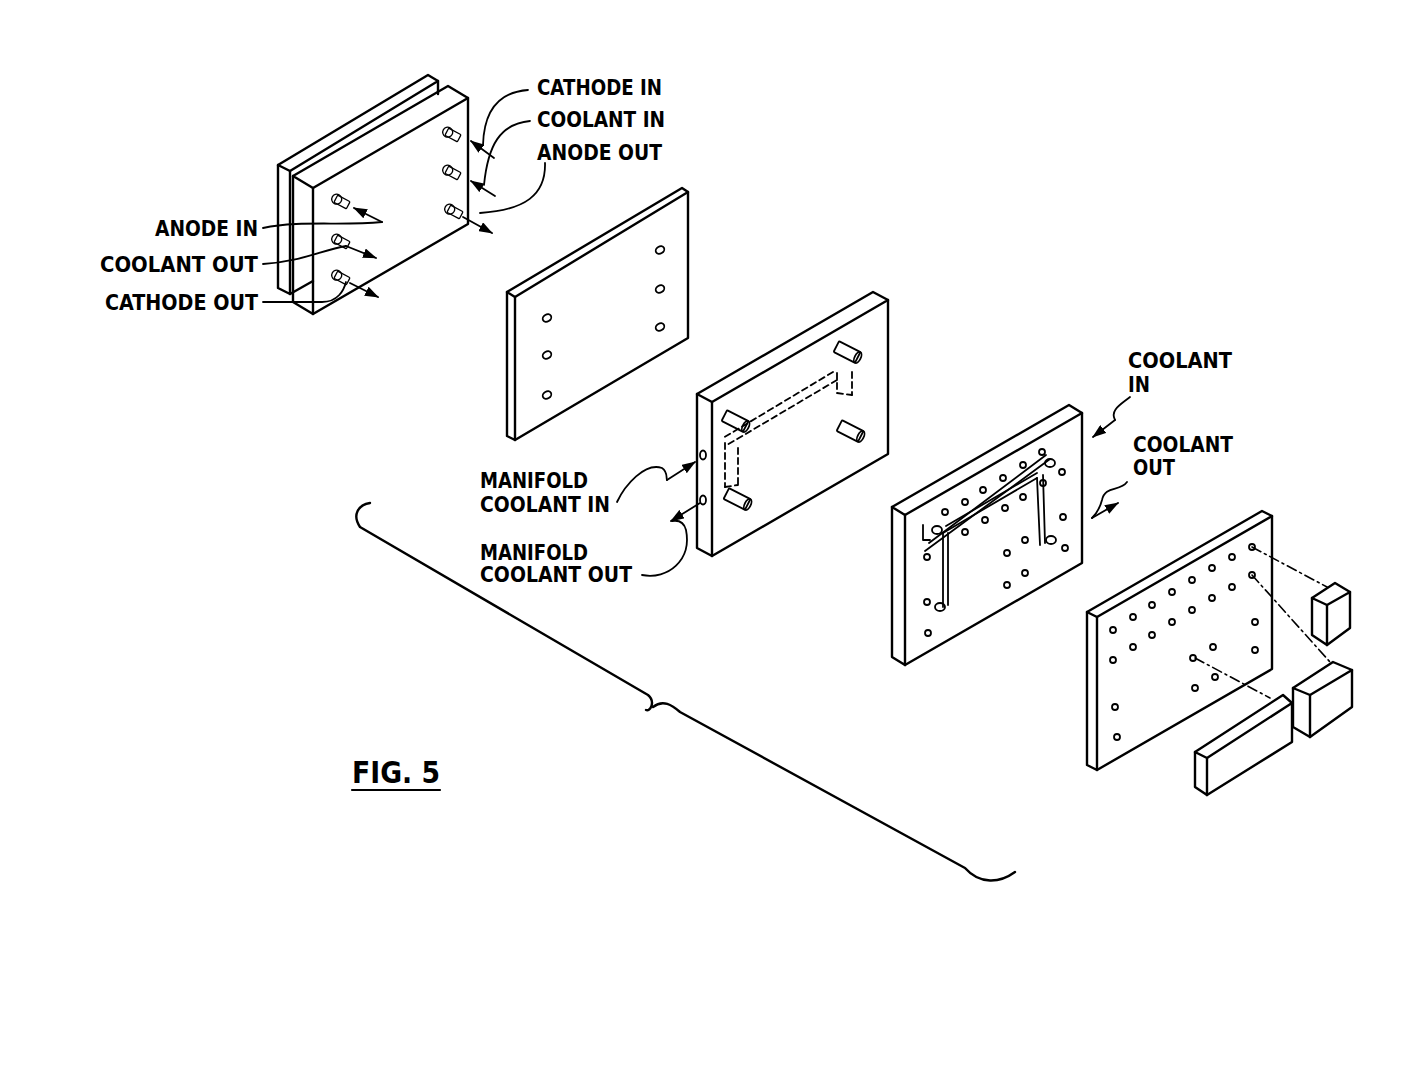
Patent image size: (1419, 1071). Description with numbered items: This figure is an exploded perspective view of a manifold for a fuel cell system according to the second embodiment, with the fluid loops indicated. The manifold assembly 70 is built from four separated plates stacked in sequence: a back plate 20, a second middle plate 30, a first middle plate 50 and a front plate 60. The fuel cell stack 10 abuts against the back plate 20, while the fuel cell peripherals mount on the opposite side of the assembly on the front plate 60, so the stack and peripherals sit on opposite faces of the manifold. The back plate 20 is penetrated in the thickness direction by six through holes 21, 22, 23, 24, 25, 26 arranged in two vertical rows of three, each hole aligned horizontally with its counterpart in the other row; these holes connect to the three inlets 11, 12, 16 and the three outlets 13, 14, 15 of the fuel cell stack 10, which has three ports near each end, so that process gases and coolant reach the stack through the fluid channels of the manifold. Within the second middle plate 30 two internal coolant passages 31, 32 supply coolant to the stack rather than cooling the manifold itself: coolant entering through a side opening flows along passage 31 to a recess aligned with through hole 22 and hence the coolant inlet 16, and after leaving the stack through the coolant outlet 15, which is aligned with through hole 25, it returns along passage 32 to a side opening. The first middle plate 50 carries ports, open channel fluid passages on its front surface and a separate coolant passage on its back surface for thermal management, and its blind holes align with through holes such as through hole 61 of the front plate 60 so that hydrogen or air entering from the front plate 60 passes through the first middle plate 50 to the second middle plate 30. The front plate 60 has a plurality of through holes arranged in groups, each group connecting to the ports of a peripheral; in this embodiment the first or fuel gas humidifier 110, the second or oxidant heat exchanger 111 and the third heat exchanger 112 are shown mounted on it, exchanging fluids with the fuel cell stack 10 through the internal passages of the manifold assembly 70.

The fuel cell stack 10 is at (277, 175).
The inlet 11 is at (347, 197).
The inlet 12 is at (447, 138).
The outlet 13 is at (346, 280).
The outlet 14 is at (456, 218).
The coolant outlet 15 is at (345, 243).
The coolant inlet 16 is at (447, 176).
The back plate 20 is at (690, 188).
The through hole 21 is at (668, 250).
The through hole 22 is at (668, 289).
The through hole 23 is at (670, 327).
The through hole 24 is at (542, 320).
The through hole 25 is at (542, 357).
The through hole 26 is at (542, 397).
The second middle plate 30 is at (884, 290).
The internal coolant passage 31 is at (778, 405).
The internal coolant passage 32 is at (710, 501).
The first middle plate 50 is at (1068, 400).
The front plate 60 is at (1265, 508).
The through hole 61 is at (1253, 547).
The manifold assembly 70 is at (685, 692).
The first or fuel gas humidifier 110 is at (1340, 620).
The second or oxidant heat exchanger 111 is at (1248, 750).
The third heat exchanger 112 is at (1338, 705).